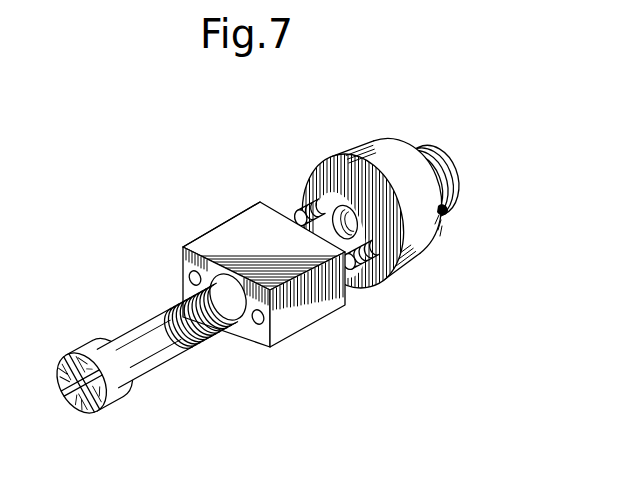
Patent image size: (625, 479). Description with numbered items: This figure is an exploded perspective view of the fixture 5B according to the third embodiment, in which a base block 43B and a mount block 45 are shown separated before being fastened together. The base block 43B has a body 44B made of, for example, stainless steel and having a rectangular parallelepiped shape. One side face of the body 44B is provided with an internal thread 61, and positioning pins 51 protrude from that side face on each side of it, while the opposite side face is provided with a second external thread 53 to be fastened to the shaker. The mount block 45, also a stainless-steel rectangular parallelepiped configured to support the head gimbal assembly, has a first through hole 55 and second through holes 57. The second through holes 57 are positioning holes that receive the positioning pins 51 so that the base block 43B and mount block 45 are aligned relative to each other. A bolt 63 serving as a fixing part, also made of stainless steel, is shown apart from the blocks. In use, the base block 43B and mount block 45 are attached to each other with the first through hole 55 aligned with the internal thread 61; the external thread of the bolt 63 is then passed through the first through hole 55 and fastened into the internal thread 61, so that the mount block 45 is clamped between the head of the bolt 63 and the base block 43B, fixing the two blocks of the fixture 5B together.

The fixture 5B is at (222, 209).
The base block 43B is at (333, 152).
The body 44B is at (389, 148).
The mount block 45 is at (203, 230).
The positioning pins 51 is at (294, 212).
The second external thread 53 is at (447, 163).
The first through hole 55 is at (230, 305).
The second through holes 57 is at (192, 281).
The internal thread 61 is at (446, 208).
The bolt 63 is at (152, 372).